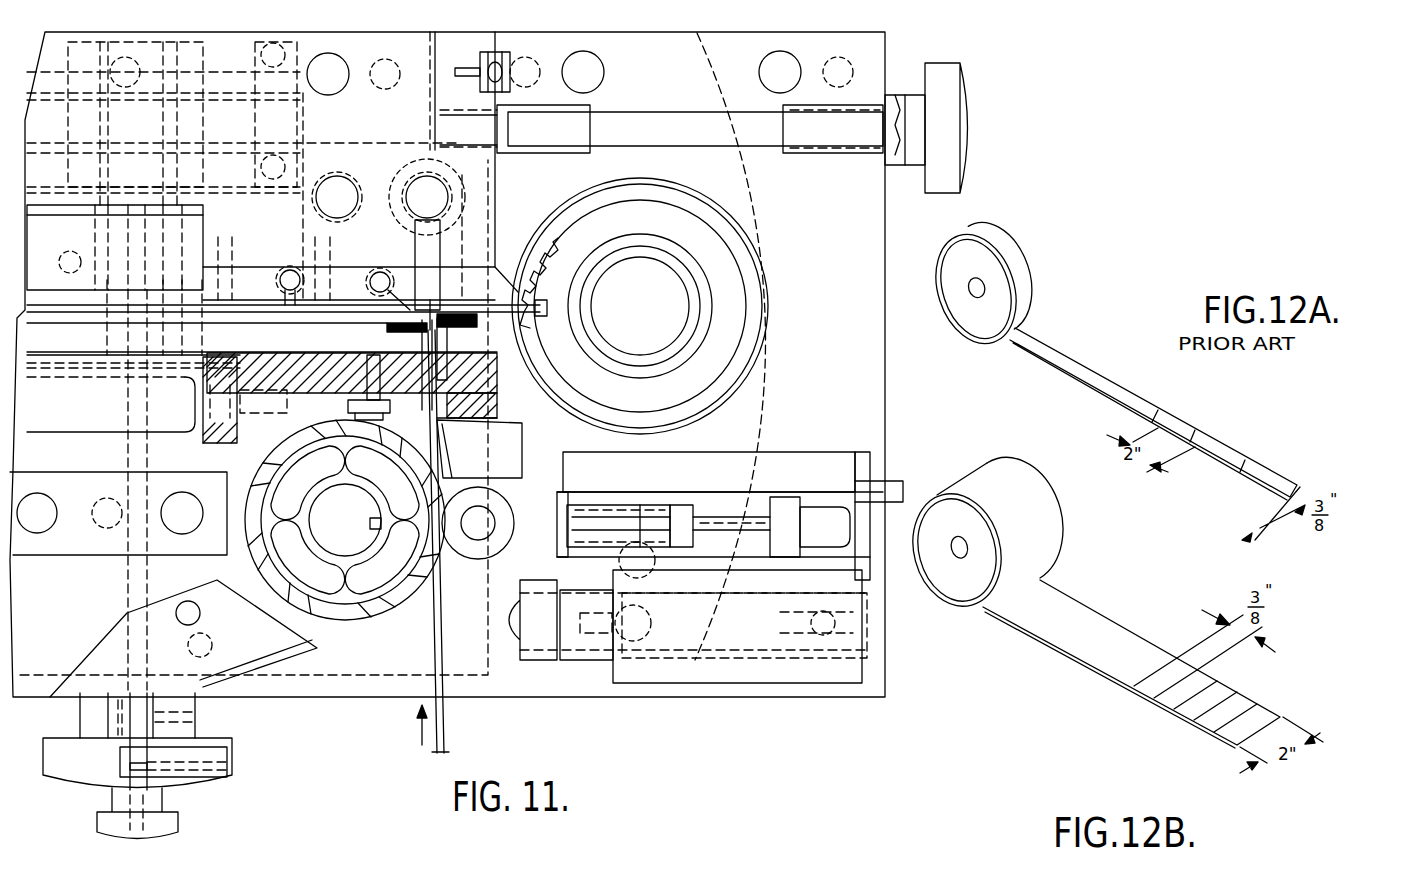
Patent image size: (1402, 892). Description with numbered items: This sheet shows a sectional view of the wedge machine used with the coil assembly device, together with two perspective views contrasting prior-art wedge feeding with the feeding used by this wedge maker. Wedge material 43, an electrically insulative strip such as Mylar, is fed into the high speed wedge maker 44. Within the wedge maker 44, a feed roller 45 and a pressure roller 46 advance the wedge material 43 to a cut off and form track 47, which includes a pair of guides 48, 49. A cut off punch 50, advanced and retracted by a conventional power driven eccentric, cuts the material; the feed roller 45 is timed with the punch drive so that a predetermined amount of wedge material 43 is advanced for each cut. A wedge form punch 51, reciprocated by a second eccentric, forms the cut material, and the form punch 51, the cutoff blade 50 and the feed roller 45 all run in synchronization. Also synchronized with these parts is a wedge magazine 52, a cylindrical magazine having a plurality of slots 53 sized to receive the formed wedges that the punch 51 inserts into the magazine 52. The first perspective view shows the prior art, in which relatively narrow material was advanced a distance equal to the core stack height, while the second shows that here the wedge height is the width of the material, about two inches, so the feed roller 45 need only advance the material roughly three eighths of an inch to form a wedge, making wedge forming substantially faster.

The wedge material 43 is at (447, 710).
The wedge maker 44 is at (563, 662).
The feed roller 45 is at (404, 612).
The pressure roller 46 is at (482, 560).
The cut off and form track 47 is at (425, 365).
The guide 48 is at (420, 323).
The guide 49 is at (445, 337).
The cut off punch 50 is at (322, 325).
The wedge form punch 51 is at (343, 300).
The wedge magazine 52 is at (587, 294).
The slots 53 is at (560, 330).